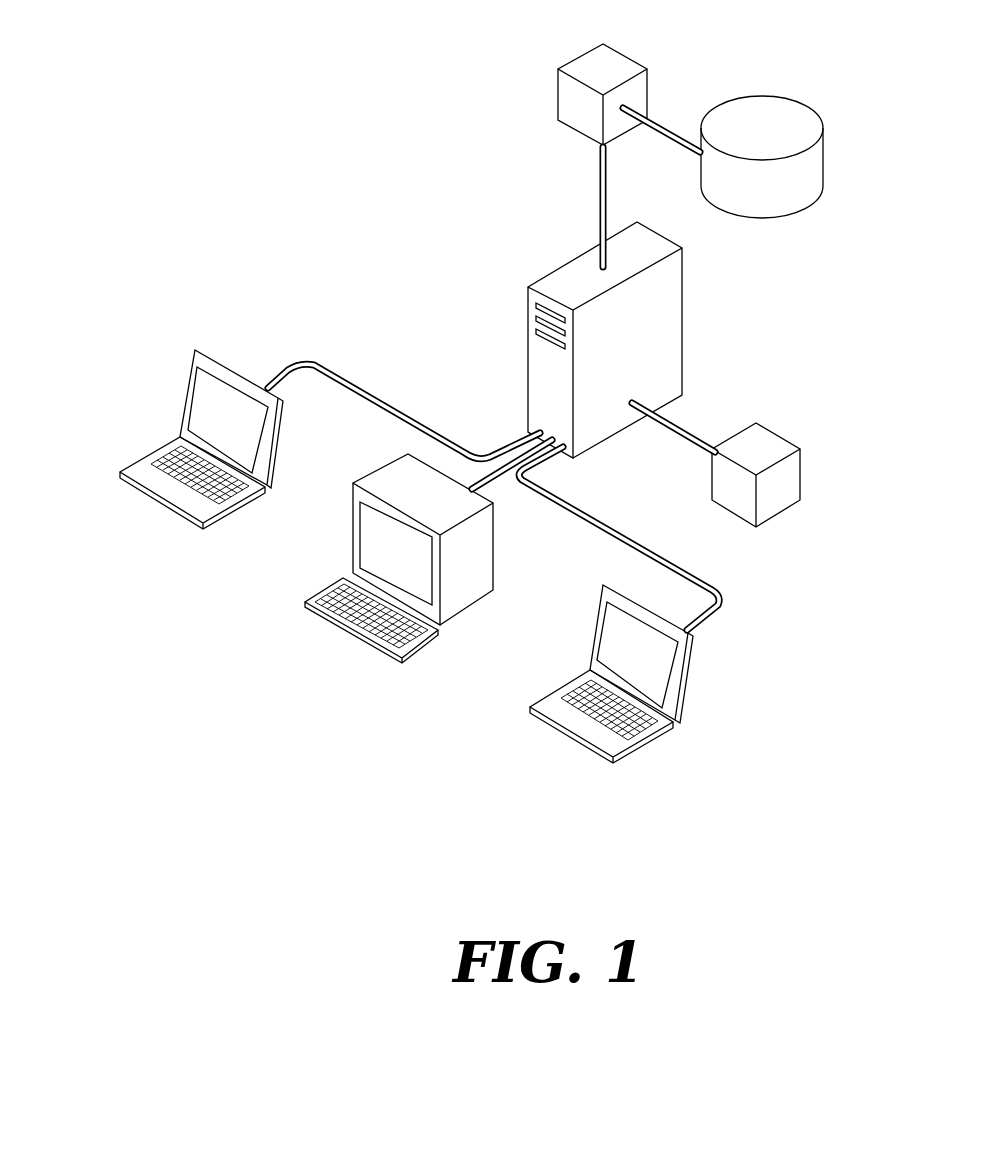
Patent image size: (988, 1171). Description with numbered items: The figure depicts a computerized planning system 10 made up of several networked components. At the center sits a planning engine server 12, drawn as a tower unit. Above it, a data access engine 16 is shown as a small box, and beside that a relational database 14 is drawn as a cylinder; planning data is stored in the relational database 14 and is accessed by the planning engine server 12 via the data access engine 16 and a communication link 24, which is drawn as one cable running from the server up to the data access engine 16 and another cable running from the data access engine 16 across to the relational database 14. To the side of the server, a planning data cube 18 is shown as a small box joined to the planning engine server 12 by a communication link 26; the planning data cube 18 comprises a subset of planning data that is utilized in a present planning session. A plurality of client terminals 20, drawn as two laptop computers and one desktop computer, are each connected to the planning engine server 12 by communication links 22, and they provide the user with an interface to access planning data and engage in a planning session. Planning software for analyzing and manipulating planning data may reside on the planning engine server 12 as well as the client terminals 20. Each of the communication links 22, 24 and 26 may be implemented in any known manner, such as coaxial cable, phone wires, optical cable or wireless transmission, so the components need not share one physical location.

The planning system 10 is at (247, 67).
The planning engine server 12 is at (655, 325).
The relational database 14 is at (746, 205).
The data access engine 16 is at (567, 98).
The planning data cube 18 is at (788, 480).
The client terminals 20 is at (133, 495).
The communication links 22 is at (395, 408).
The communication link 24 is at (667, 127).
The communication link 26 is at (690, 437).